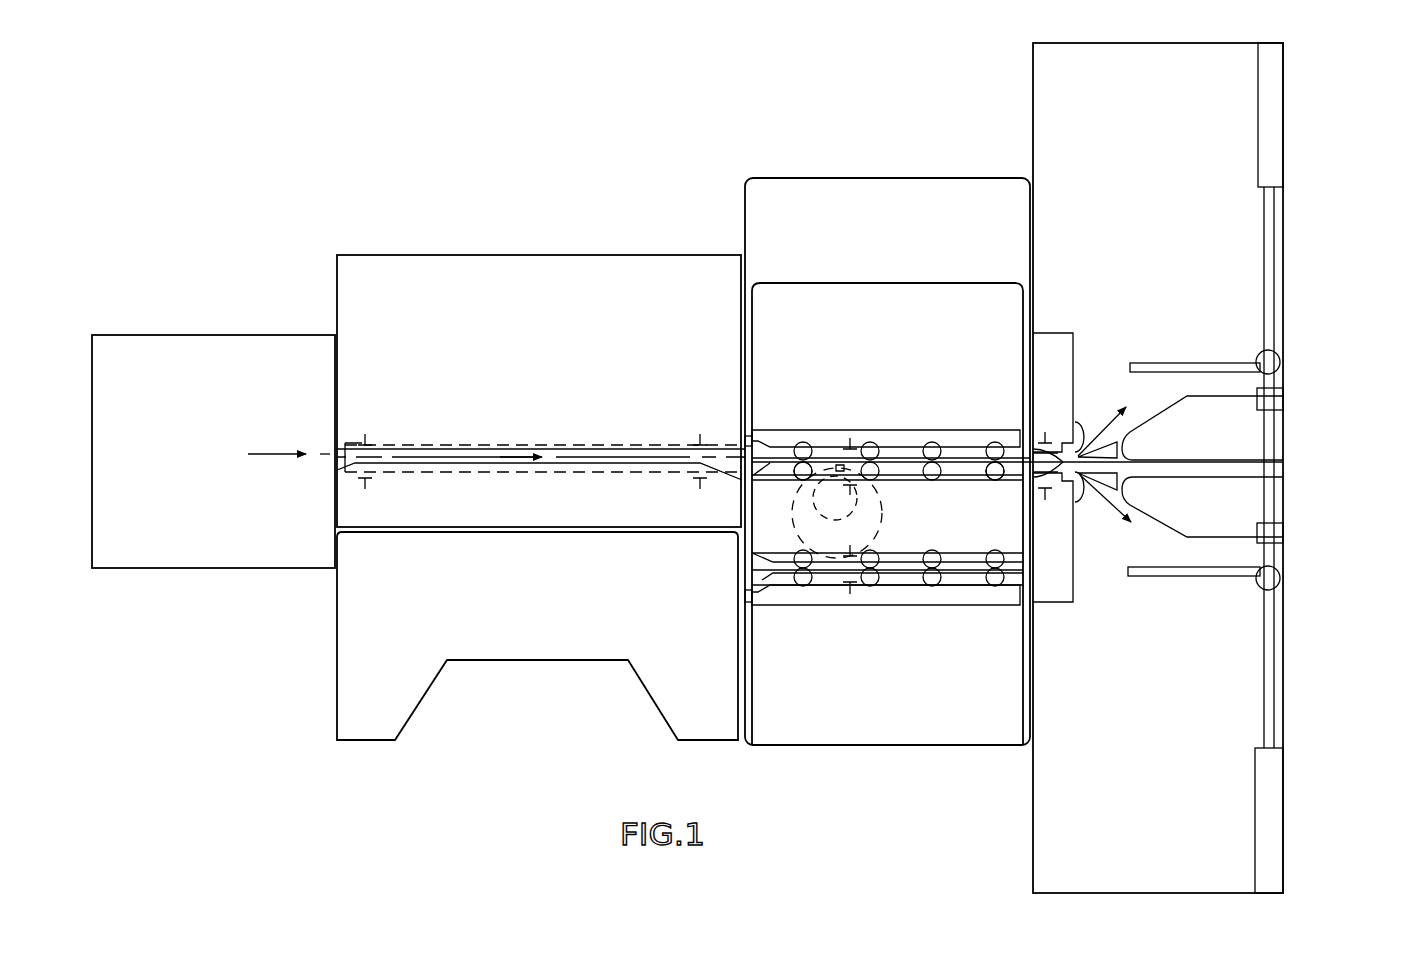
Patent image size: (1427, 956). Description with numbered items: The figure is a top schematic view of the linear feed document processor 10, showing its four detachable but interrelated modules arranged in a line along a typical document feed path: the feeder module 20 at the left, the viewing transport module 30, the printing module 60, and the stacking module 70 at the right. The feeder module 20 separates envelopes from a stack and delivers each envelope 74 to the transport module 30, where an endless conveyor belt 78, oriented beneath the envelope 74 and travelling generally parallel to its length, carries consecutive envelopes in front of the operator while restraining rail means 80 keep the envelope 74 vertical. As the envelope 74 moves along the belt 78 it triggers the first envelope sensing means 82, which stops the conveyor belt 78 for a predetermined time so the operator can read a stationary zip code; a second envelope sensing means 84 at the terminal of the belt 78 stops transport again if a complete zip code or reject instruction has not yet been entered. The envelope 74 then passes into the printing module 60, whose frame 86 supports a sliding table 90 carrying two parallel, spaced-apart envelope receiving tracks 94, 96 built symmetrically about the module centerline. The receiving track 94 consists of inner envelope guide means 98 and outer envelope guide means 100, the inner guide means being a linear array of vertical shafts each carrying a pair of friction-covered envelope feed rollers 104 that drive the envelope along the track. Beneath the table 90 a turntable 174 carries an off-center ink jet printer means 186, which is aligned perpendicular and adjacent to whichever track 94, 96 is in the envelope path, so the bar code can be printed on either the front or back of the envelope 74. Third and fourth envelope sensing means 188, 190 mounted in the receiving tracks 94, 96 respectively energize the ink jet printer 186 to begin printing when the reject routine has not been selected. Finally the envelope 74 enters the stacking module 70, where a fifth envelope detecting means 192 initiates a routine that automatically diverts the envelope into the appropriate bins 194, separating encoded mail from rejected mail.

The linear feed document processor 10 is at (1302, 116).
The feeder module 20 is at (208, 358).
The viewing transport module 30 is at (537, 276).
The printing module 60 is at (890, 198).
The stacking module 70 is at (1072, 792).
The envelope 74 is at (514, 456).
The endless conveyor belt 78 is at (470, 447).
The restraining rail means 80 is at (427, 463).
The first envelope sensing means 82 is at (366, 436).
The second envelope sensing means 84 is at (700, 436).
The frame 86 is at (880, 728).
The sliding table 90 is at (760, 541).
The envelope receiving track 94 is at (973, 447).
The envelope receiving track 96 is at (958, 582).
The inner envelope guide means 98 is at (936, 480).
The outer envelope guide means 100 is at (921, 447).
The envelope feed roller 104 is at (790, 470).
The turntable 174 is at (803, 506).
The ink jet printer means 186 is at (848, 513).
The third envelope sensing means 188 is at (856, 440).
The fourth envelope sensing means 190 is at (856, 594).
The fifth envelope detecting means 192 is at (1047, 438).
The bins 194 is at (1245, 288).